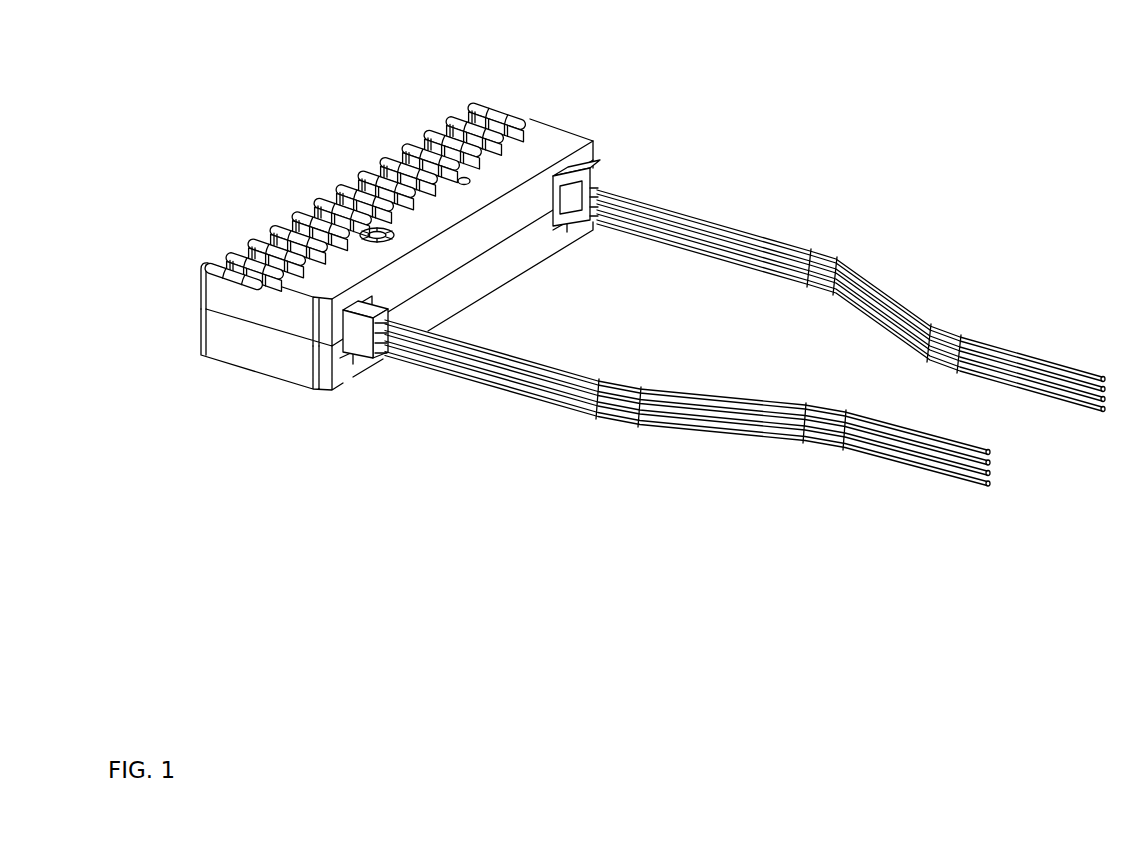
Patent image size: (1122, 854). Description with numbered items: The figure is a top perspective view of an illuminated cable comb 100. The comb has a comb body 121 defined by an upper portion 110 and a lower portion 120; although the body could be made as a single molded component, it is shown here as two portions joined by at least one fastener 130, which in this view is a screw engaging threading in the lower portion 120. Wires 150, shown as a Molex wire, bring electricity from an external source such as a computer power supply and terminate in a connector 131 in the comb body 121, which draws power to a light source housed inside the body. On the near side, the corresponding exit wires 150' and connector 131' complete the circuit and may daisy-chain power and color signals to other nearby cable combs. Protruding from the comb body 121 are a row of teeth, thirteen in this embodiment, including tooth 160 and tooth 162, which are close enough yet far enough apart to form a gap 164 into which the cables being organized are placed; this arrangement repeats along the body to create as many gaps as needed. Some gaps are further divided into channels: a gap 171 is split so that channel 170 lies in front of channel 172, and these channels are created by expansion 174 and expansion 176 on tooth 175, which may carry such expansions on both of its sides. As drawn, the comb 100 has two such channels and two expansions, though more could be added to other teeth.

The illuminated cable comb 100 is at (640, 547).
The upper portion 110 is at (227, 294).
The lower portion 120 is at (223, 342).
The comb body 121 is at (603, 128).
The fastener 130 is at (381, 240).
The connector 131 is at (641, 188).
The connector 131' is at (407, 350).
The wires 150 is at (851, 301).
The wires 150' is at (687, 403).
The tooth 160 is at (268, 245).
The tooth 162 is at (298, 210).
The gap 164 is at (287, 220).
The channel 170 is at (373, 180).
The gap 171 is at (412, 200).
The channel 172 is at (403, 195).
The expansion 174 is at (458, 137).
The tooth 175 is at (480, 148).
The expansion 176 is at (429, 140).